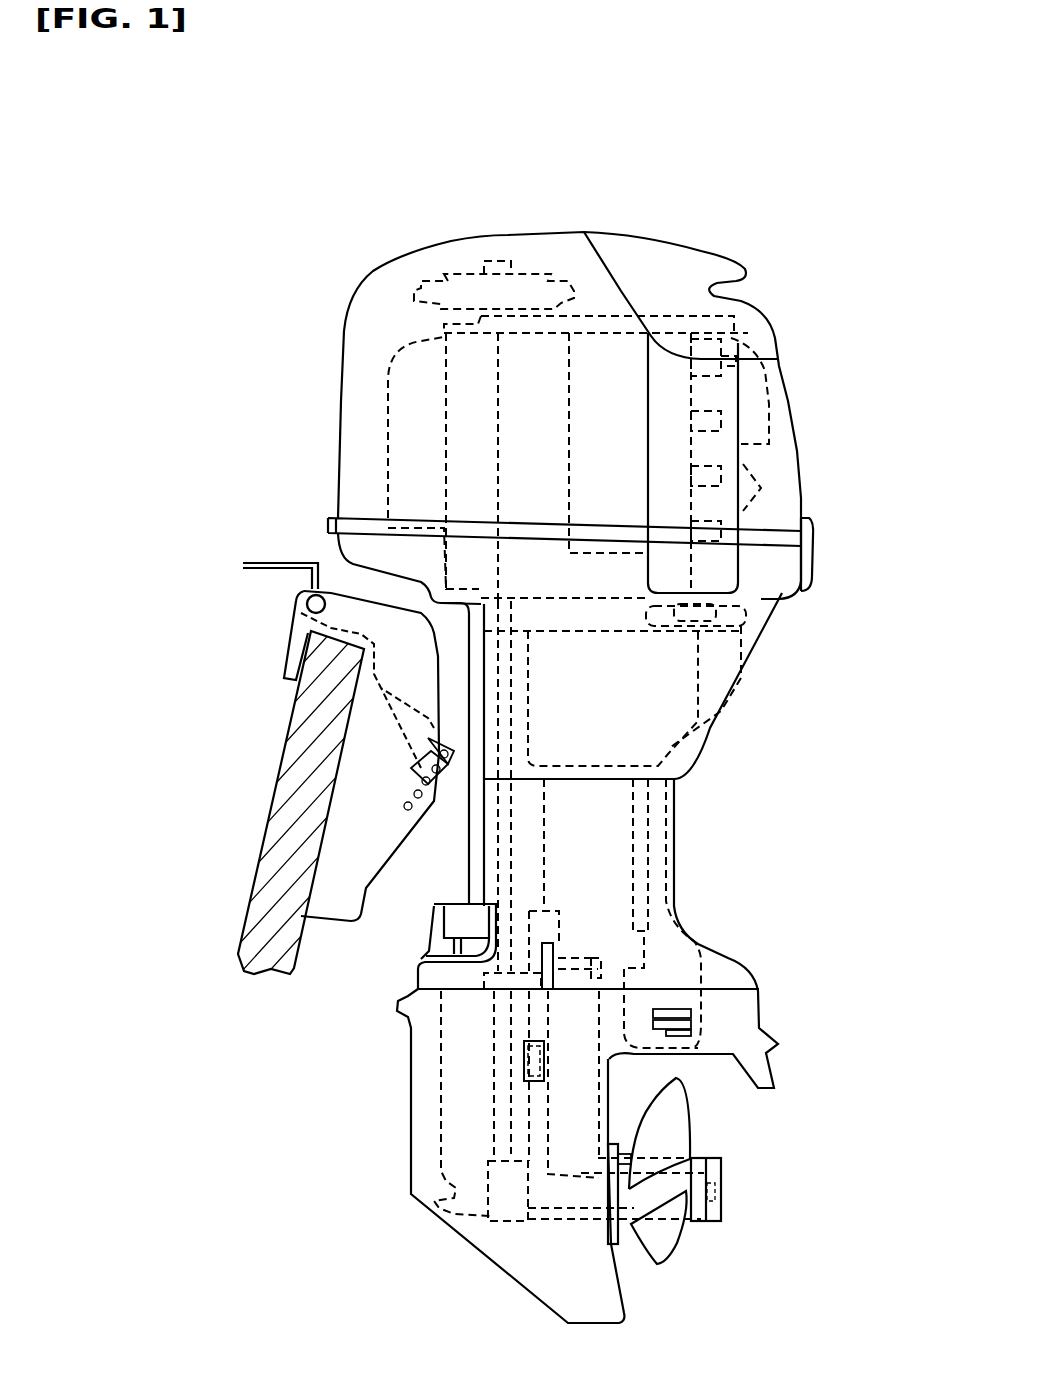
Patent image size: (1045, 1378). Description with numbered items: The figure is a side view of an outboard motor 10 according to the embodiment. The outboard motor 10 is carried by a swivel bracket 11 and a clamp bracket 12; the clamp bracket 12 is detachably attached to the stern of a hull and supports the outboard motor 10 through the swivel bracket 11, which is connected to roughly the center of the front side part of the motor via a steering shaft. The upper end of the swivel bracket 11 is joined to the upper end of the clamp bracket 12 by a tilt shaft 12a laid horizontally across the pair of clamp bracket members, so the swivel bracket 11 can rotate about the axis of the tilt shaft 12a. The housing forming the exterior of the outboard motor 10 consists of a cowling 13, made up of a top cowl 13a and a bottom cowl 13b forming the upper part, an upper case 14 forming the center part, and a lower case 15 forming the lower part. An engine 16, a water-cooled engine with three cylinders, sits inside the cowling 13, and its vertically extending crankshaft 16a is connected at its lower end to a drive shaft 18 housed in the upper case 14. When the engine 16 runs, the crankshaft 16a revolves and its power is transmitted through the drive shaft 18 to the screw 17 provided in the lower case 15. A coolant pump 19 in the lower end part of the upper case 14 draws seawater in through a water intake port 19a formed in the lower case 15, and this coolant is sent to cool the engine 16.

The outboard motor 10 is at (831, 247).
The swivel bracket 11 is at (447, 845).
The clamp bracket 12 is at (262, 884).
The tilt shaft 12a is at (305, 603).
The cowling 13 is at (633, 569).
The top cowl 13a is at (785, 498).
The bottom cowl 13b is at (780, 572).
The upper case 14 is at (678, 838).
The lower case 15 is at (422, 1112).
The engine 16 is at (397, 345).
The crankshaft 16a is at (500, 258).
The screw 17 is at (680, 1132).
The drive shaft 18 is at (508, 875).
The coolant pump 19 is at (475, 975).
The water intake port 19a is at (545, 1048).